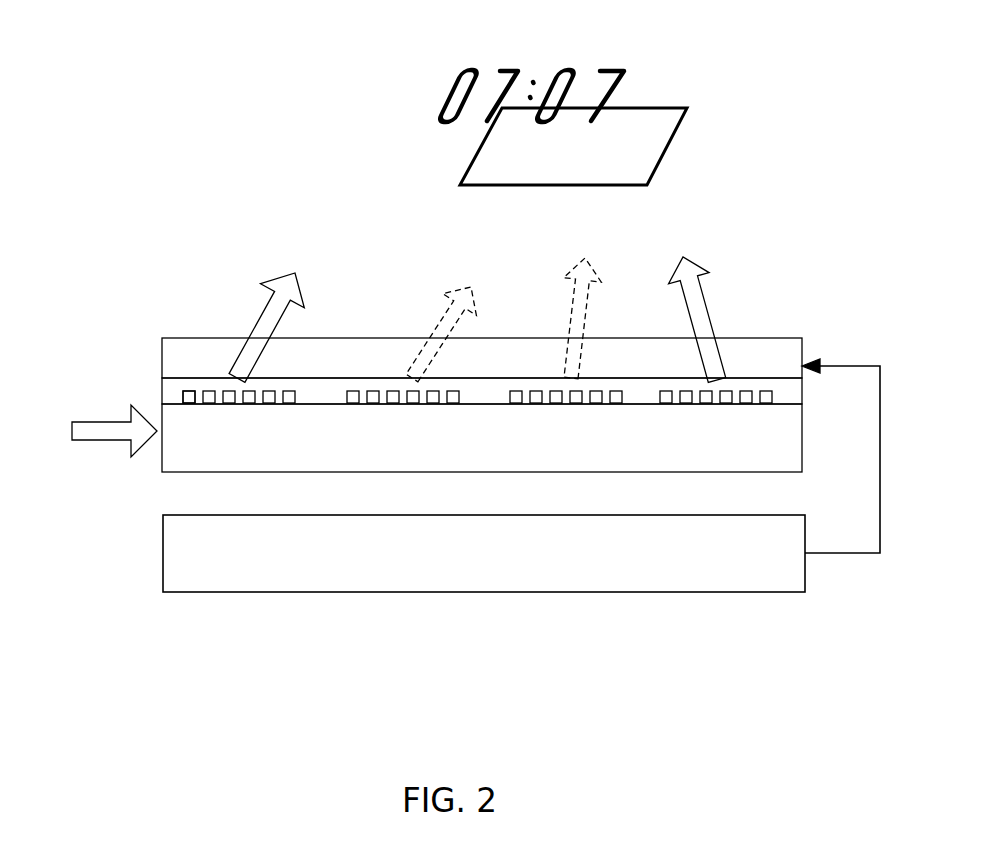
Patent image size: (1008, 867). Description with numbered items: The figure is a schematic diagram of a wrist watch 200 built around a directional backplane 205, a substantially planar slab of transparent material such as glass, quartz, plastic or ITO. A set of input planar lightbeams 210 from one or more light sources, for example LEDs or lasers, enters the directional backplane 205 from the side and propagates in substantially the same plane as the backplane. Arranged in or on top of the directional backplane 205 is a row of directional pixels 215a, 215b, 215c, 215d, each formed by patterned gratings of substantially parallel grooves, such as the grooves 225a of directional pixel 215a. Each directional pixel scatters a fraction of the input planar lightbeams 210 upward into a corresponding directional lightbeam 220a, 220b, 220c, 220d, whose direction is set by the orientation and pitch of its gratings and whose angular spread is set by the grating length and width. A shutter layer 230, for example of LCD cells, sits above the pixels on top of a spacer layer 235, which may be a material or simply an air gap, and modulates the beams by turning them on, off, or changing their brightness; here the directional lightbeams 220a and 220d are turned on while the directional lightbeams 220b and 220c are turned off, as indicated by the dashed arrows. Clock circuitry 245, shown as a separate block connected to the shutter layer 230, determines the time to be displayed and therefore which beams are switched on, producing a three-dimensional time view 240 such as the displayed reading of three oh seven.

The wrist watch 200 is at (296, 184).
The directional backplane 205 is at (782, 443).
The input planar lightbeams 210 is at (107, 422).
The directional pixel 215a is at (193, 395).
The directional pixel 215b is at (393, 393).
The directional pixel 215c is at (602, 392).
The directional pixel 215d is at (707, 395).
The directional lightbeam 220a is at (263, 313).
The directional lightbeam 220b is at (435, 322).
The directional lightbeam 220c is at (568, 312).
The directional lightbeam 220d is at (675, 273).
The grooves 225a is at (227, 403).
The shutter layer 230 is at (205, 352).
The spacer layer 235 is at (642, 395).
The time view 240 is at (563, 67).
The clock circuitry 245 is at (180, 540).